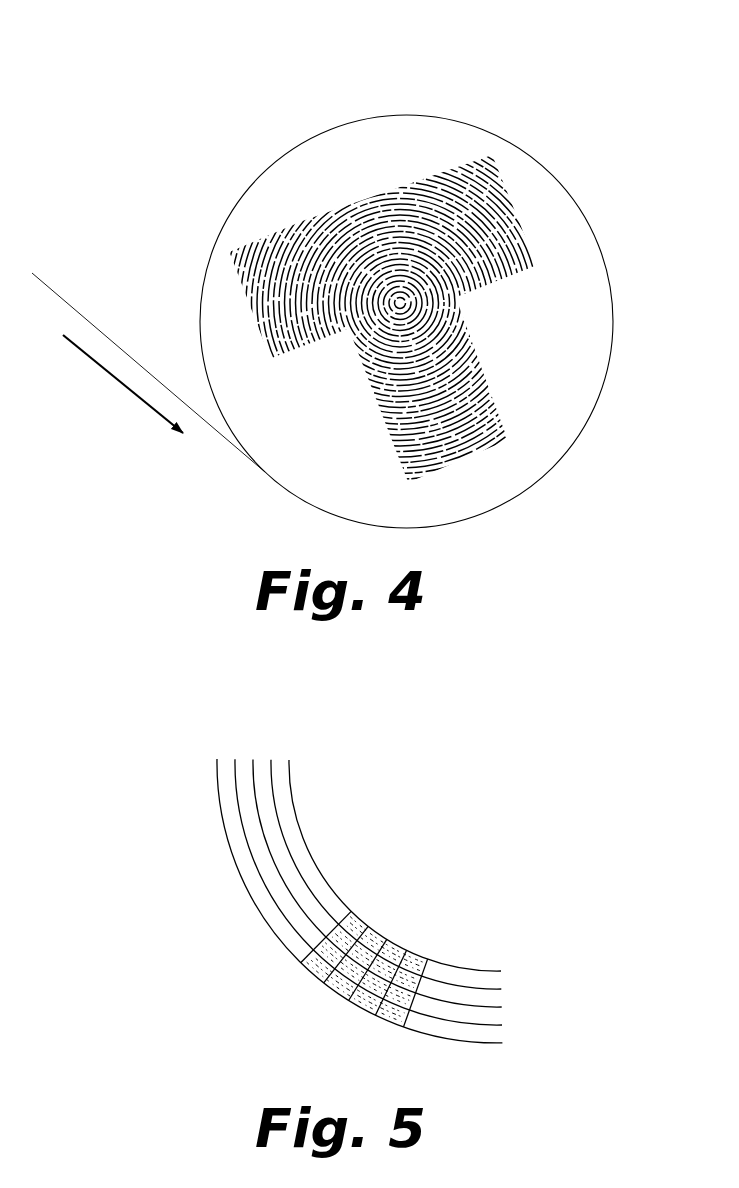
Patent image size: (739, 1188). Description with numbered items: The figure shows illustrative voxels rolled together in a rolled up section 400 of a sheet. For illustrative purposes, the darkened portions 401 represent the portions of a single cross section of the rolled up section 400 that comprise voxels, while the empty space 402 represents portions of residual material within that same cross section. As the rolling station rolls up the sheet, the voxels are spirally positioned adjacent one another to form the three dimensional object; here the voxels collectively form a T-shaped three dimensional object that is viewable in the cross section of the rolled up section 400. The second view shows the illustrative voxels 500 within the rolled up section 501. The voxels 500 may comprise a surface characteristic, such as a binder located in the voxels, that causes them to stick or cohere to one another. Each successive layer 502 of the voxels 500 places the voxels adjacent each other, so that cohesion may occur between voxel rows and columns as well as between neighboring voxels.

In FIG. 4, the rolled up section 400 is at (240, 135).
In FIG. 4, the darkened portions 401 is at (485, 132).
In FIG. 4, the empty space 402 is at (260, 387).
In FIG. 5, the voxels 500 is at (407, 963).
In FIG. 5, the rolled up section 501 is at (125, 895).
In FIG. 5, the successive layer 502 is at (528, 1013).